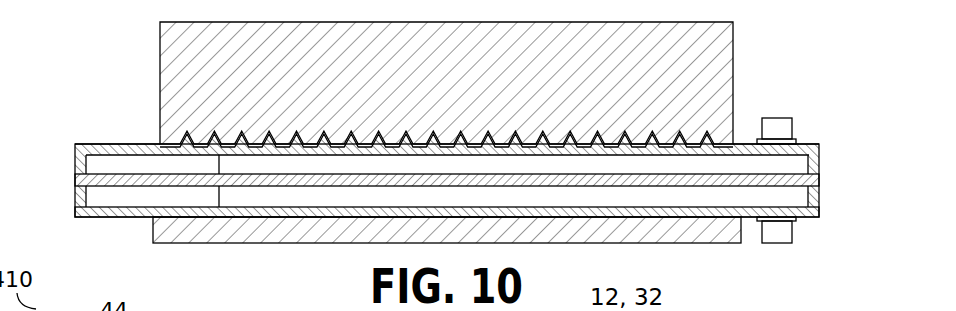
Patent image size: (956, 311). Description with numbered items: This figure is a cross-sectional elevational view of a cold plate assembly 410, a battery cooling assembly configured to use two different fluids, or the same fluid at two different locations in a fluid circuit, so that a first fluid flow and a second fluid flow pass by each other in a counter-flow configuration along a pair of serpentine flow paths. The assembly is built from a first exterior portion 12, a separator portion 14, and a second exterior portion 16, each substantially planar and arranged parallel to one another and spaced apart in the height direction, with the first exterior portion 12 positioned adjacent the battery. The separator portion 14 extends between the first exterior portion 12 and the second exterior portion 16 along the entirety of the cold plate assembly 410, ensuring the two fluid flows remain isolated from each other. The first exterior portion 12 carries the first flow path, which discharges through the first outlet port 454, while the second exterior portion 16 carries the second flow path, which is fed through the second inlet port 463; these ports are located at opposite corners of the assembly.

The cold plate assembly 410 is at (92, 94).
The first exterior portion 12 is at (818, 152).
The separator portion 14 is at (818, 180).
The second exterior portion 16 is at (818, 210).
The first outlet port 454 is at (793, 118).
The second inlet port 463 is at (793, 243).